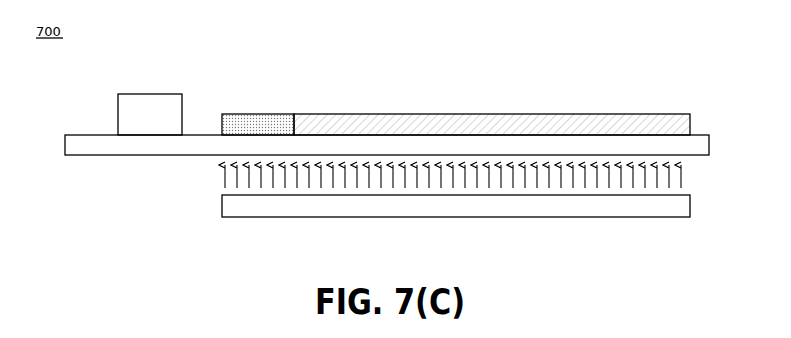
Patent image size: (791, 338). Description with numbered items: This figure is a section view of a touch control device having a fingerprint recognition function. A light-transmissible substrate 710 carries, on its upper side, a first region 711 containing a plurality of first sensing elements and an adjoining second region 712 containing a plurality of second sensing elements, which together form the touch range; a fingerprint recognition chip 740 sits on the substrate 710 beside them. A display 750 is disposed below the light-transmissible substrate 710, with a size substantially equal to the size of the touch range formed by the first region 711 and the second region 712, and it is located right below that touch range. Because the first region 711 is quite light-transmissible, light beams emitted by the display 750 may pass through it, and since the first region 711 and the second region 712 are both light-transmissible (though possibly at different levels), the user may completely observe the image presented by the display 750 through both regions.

The light-transmissible substrate 710 is at (72, 134).
The first region 711 is at (272, 113).
The second region 712 is at (607, 113).
The fingerprint recognition chip 740 is at (176, 94).
The display 750 is at (692, 196).